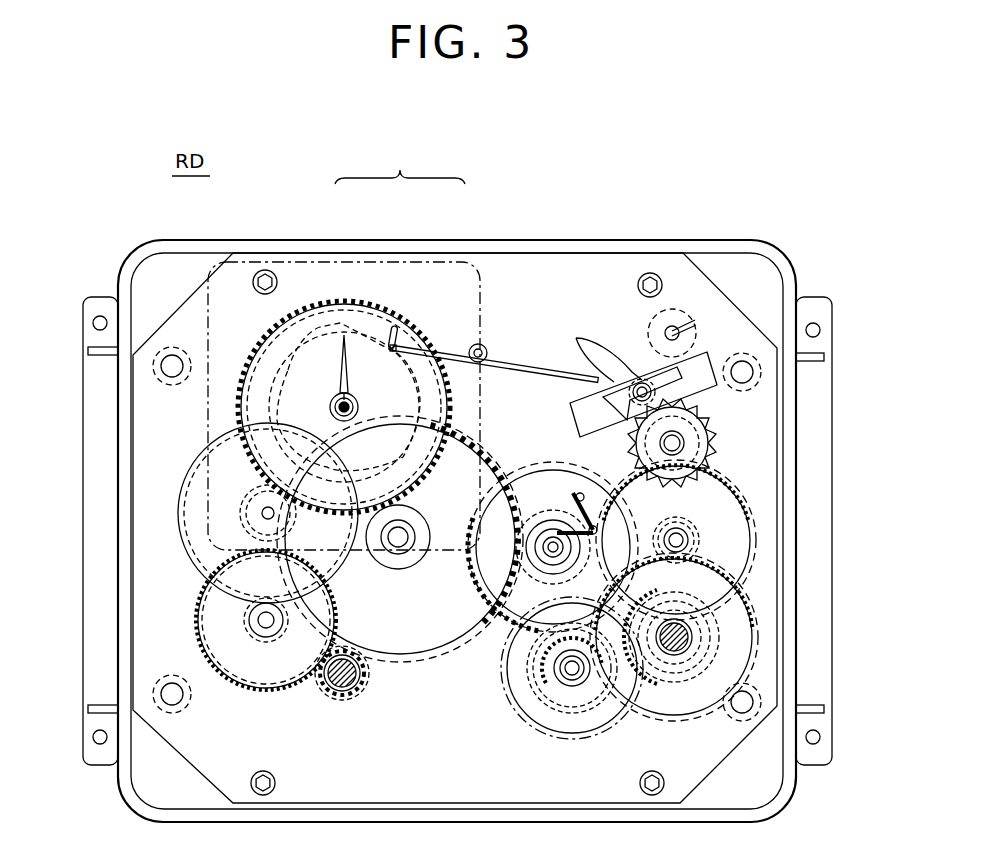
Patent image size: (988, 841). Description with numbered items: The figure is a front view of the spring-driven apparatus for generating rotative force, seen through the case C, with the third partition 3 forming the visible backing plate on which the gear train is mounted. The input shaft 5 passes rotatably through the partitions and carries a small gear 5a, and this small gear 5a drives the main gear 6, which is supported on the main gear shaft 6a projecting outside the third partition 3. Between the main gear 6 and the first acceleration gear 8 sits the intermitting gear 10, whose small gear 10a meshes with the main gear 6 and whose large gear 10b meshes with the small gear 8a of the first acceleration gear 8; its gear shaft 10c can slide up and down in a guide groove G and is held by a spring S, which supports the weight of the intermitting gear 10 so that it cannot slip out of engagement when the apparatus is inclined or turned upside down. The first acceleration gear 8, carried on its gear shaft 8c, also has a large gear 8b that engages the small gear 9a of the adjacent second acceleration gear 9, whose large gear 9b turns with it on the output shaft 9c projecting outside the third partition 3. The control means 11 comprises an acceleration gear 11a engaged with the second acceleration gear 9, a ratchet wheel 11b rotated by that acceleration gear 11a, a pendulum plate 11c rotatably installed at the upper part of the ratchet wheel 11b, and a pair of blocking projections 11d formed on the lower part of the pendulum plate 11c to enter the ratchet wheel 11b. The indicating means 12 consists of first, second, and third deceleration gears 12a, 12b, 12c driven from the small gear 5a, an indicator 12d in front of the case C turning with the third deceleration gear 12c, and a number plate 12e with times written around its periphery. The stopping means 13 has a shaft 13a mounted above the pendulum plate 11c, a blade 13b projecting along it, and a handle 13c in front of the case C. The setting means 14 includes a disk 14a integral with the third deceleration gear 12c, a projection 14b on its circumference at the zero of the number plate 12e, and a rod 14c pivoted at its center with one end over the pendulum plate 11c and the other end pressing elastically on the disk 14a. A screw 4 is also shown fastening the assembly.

The third partition 3 is at (528, 253).
The case C is at (598, 252).
The screw 4 is at (652, 272).
The input shaft 5 is at (356, 702).
The small gear 5a is at (368, 672).
The main gear 6 is at (478, 432).
The main gear shaft 6a is at (398, 550).
The first acceleration gear 8 is at (520, 728).
The small gear 8a is at (540, 650).
The large gear 8b is at (525, 690).
The gear shaft 8c is at (565, 682).
The second acceleration gear 9 is at (648, 720).
The small gear 9a is at (715, 640).
The large gear 9b is at (730, 603).
The output shaft 9c is at (678, 652).
The intermitting gear 10 is at (545, 460).
The small gear 10a is at (515, 508).
The large gear 10b is at (478, 588).
The gear shaft 10c is at (540, 560).
The guide groove G is at (540, 548).
The spring S is at (592, 505).
The control means 11 is at (738, 405).
The acceleration gear 11a is at (737, 525).
The ratchet wheel 11b is at (710, 442).
The pendulum plate 11c is at (712, 358).
The blocking projections 11d is at (584, 370).
The indicating means 12 is at (175, 432).
The first deceleration gear 12a is at (250, 670).
The second deceleration gear 12b is at (202, 546).
The third deceleration gear 12c is at (268, 350).
The indicator 12d is at (318, 418).
The number plate 12e is at (208, 330).
The stopping means 13 is at (698, 318).
The shaft 13a is at (680, 320).
The blade 13b is at (700, 312).
The handle 13c is at (660, 322).
The setting means 14 is at (400, 165).
The disk 14a is at (373, 327).
The projection 14b is at (330, 322).
The rod 14c is at (400, 330).